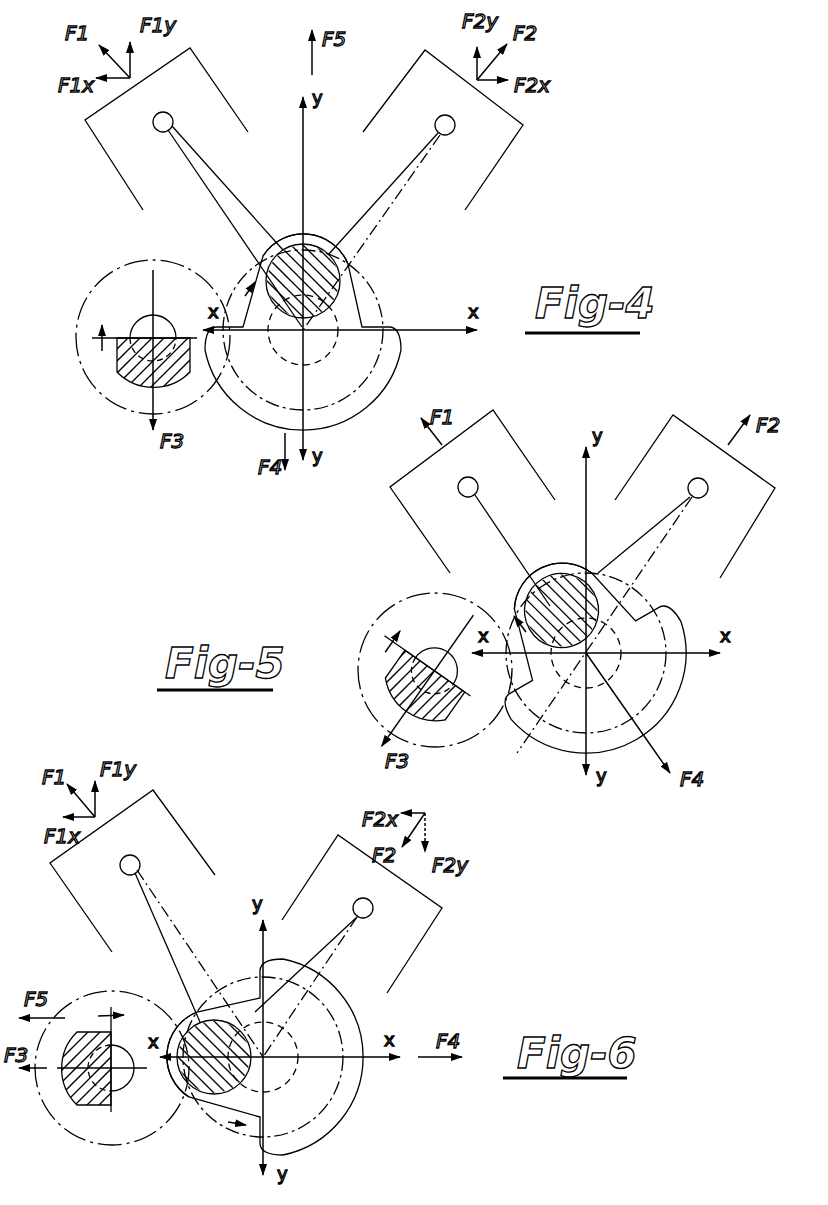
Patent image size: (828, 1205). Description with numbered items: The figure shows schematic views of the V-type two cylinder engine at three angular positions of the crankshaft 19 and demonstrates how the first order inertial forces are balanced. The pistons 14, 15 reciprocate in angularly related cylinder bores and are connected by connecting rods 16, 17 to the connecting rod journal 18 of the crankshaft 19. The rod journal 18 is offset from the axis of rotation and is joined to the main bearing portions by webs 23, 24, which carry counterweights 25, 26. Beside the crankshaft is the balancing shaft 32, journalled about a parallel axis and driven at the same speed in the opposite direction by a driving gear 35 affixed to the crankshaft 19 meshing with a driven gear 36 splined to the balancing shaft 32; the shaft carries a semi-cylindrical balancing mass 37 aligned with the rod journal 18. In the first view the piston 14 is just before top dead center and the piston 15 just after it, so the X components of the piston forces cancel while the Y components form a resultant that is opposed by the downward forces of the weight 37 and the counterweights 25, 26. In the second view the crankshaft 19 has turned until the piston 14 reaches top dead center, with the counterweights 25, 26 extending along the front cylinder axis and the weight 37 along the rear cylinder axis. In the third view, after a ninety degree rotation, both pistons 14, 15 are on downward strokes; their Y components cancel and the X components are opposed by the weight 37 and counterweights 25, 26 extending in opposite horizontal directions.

In FIG. 4, the piston 14 is at (113, 165).
In FIG. 5, the piston 14 is at (514, 438).
In FIG. 6, the piston 14 is at (183, 828).
In FIG. 4, the piston 15 is at (493, 170).
In FIG. 5, the piston 15 is at (757, 518).
In FIG. 6, the piston 15 is at (325, 848).
In FIG. 4, the connecting rod 16 is at (204, 166).
In FIG. 5, the connecting rod 16 is at (491, 519).
In FIG. 6, the connecting rod 16 is at (147, 900).
In FIG. 4, the connecting rod 17 is at (409, 166).
In FIG. 5, the connecting rod 17 is at (667, 516).
In FIG. 6, the connecting rod 17 is at (348, 928).
In FIG. 4, the connecting rod journal 18 is at (318, 244).
In FIG. 5, the connecting rod journal 18 is at (557, 572).
In FIG. 6, the connecting rod journal 18 is at (247, 1073).
In FIG. 4, the crankshaft 19 is at (272, 357).
In FIG. 5, the crankshaft 19 is at (622, 672).
In FIG. 6, the crankshaft 19 is at (290, 1031).
In FIG. 4, the web 23 is at (296, 234).
In FIG. 5, the web 23 is at (530, 660).
In FIG. 6, the web 23 is at (194, 1094).
In FIG. 4, the web 24 is at (283, 236).
In FIG. 5, the web 24 is at (513, 678).
In FIG. 6, the web 24 is at (195, 1108).
In FIG. 4, the counterweight 25 is at (344, 332).
In FIG. 5, the counterweight 25 is at (587, 679).
In FIG. 6, the counterweight 25 is at (311, 1057).
In FIG. 4, the counterweight 26 is at (382, 390).
In FIG. 5, the counterweight 26 is at (558, 757).
In FIG. 6, the counterweight 26 is at (357, 1022).
In FIG. 4, the balancing shaft 32 is at (160, 318).
In FIG. 5, the balancing shaft 32 is at (440, 646).
In FIG. 6, the balancing shaft 32 is at (134, 1084).
In FIG. 4, the driving gear 35 is at (376, 291).
In FIG. 5, the driving gear 35 is at (673, 693).
In FIG. 6, the driving gear 35 is at (357, 1103).
In FIG. 4, the driven gear 36 is at (117, 263).
In FIG. 5, the driven gear 36 is at (407, 592).
In FIG. 6, the driven gear 36 is at (123, 990).
In FIG. 4, the balancing mass 37 is at (125, 382).
In FIG. 5, the balancing mass 37 is at (385, 693).
In FIG. 6, the balancing mass 37 is at (93, 1104).